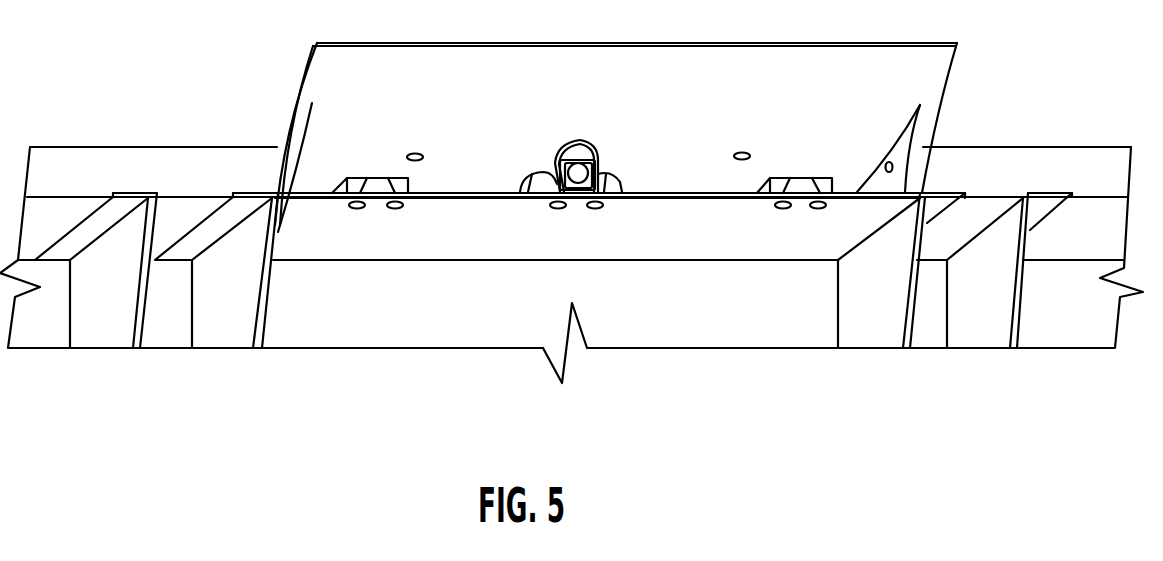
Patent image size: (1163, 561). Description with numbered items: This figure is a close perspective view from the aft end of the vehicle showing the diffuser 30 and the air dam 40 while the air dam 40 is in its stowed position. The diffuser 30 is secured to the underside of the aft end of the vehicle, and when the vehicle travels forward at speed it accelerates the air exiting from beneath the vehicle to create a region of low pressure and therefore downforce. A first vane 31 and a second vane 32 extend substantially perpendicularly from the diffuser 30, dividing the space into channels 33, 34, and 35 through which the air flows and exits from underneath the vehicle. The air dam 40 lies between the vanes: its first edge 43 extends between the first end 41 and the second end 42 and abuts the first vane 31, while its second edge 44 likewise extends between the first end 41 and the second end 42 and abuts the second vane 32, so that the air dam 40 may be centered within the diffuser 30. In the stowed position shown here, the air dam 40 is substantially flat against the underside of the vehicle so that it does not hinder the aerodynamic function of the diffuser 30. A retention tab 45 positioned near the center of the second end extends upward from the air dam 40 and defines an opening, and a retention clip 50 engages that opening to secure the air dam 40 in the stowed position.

The diffuser 30 is at (175, 190).
The first vane 31 is at (272, 330).
The second vane 32 is at (898, 334).
The channel 33 is at (188, 362).
The channel 34 is at (578, 362).
The channel 35 is at (953, 364).
The air dam 40 is at (457, 252).
The first end 41 is at (345, 272).
The second end 42 is at (709, 188).
The first edge 43 is at (280, 226).
The second edge 44 is at (864, 226).
The retention tab 45 is at (601, 144).
The retention clip 50 is at (565, 176).